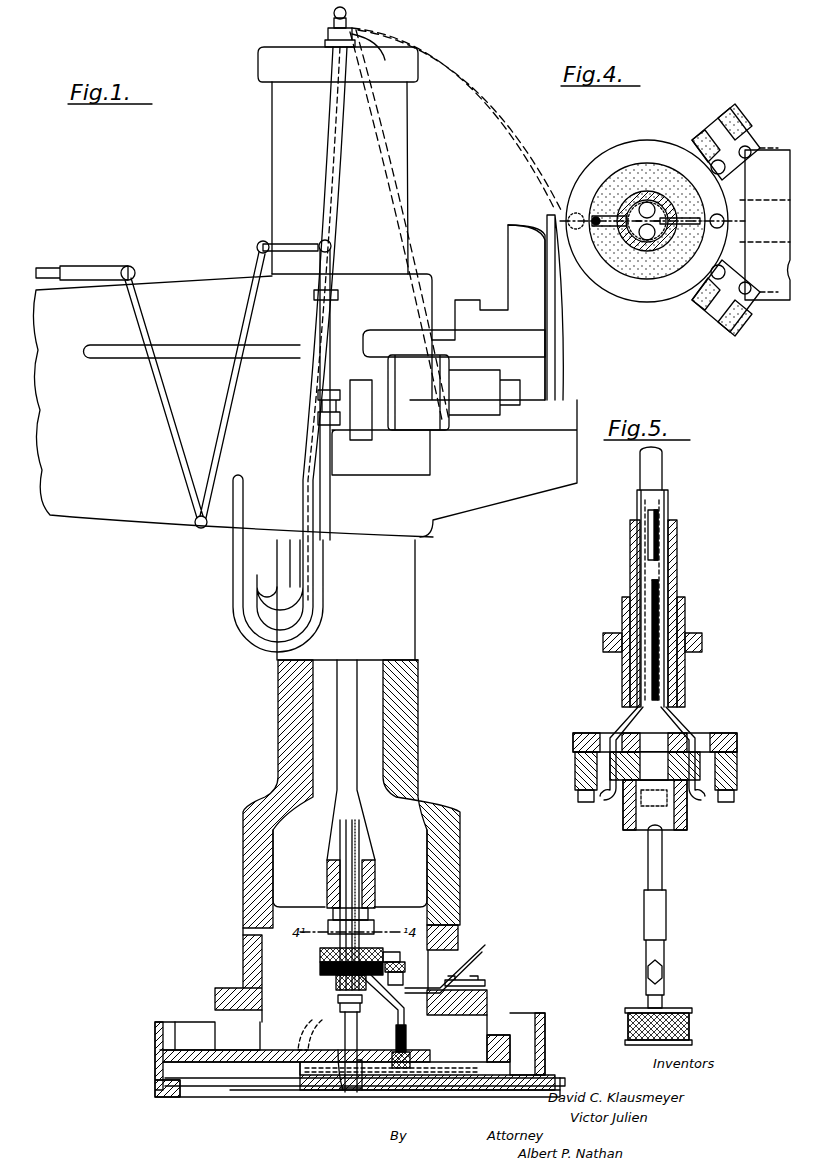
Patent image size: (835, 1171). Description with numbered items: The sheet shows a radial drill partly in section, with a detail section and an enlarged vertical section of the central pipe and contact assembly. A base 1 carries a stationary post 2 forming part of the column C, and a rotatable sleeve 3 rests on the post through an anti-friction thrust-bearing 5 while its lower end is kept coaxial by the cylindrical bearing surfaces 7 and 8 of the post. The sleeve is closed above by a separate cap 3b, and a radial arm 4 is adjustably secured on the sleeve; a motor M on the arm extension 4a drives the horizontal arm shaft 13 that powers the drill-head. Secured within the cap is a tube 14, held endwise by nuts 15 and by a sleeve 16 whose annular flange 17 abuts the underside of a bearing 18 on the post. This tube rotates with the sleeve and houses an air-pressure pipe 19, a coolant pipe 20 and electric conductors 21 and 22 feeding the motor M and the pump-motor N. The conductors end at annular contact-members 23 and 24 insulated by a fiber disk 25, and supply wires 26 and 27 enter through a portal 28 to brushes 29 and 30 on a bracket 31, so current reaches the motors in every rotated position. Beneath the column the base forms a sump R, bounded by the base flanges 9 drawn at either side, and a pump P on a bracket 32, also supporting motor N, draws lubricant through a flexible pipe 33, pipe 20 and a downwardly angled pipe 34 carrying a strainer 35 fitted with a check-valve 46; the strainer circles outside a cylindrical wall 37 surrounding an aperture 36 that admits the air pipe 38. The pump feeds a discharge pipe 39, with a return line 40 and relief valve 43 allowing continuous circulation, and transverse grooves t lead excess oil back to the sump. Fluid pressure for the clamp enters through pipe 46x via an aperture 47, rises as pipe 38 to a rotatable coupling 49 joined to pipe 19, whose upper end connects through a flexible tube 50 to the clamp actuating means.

In FIG. 1, the base 1 is at (157, 1052).
In FIG. 1, the post 2 is at (273, 860).
In FIG. 1, the sleeve 3 is at (418, 714).
In FIG. 1, the cap 3b is at (262, 84).
In FIG. 1, the radial arm 4 is at (233, 406).
In FIG. 1, the extension of the arm 4a is at (505, 497).
In FIG. 4, the anti-friction thrust-bearing 5 is at (570, 200).
In FIG. 1, the cylindrical bearing surface 7 is at (300, 738).
In FIG. 1, the cylindrical bearing surface 8 is at (250, 885).
In FIG. 1, the flange 9 is at (180, 1022).
In FIG. 1, the horizontal arm shaft 13 is at (202, 345).
In FIG. 1, the tube 14 is at (358, 740).
In FIG. 4, the tube 14 is at (688, 255).
In FIG. 5, the tube 14 is at (678, 566).
In FIG. 1, the nuts 15 is at (328, 42).
In FIG. 4, the nuts 15 is at (647, 256).
In FIG. 5, the nuts 15 is at (686, 606).
In FIG. 1, the sleeve 16 is at (375, 926).
In FIG. 5, the sleeve 16 is at (703, 636).
In FIG. 1, the annular flange 17 is at (370, 910).
In FIG. 1, the bearing 18 is at (376, 866).
In FIG. 1, the air-pressure pipe 19 is at (340, 832).
In FIG. 4, the air-pressure pipe 19 is at (648, 202).
In FIG. 5, the air-pressure pipe 19 is at (664, 462).
In FIG. 1, the lubricant or coolant pipe 20 is at (359, 834).
In FIG. 4, the lubricant or coolant pipe 20 is at (630, 240).
In FIG. 5, the lubricant or coolant pipe 20 is at (652, 530).
In FIG. 1, the electric conductor 21 is at (360, 45).
In FIG. 4, the electric conductor 21 is at (628, 212).
In FIG. 5, the electric conductor 21 is at (636, 492).
In FIG. 1, the electric conductor 22 is at (350, 30).
In FIG. 4, the electric conductor 22 is at (670, 212).
In FIG. 5, the electric conductor 22 is at (667, 502).
In FIG. 1, the annular contact-member 23 is at (322, 968).
In FIG. 5, the annular contact-member 23 is at (738, 772).
In FIG. 1, the annular contact-member 24 is at (320, 953).
In FIG. 4, the annular contact-member 24 is at (672, 302).
In FIG. 5, the annular contact-member 24 is at (738, 740).
In FIG. 1, the disk 25 is at (340, 980).
In FIG. 5, the disk 25 is at (622, 790).
In FIG. 1, the wire 26 is at (478, 937).
In FIG. 4, the wire 26 is at (790, 160).
In FIG. 1, the wire 27 is at (480, 970).
In FIG. 4, the wire 27 is at (745, 308).
In FIG. 1, the portal 28 is at (463, 965).
In FIG. 1, the contact brush 29 is at (396, 952).
In FIG. 4, the contact brush 29 is at (735, 150).
In FIG. 1, the contact brush 30 is at (406, 962).
In FIG. 4, the contact brush 30 is at (735, 312).
In FIG. 1, the bracket 31 is at (404, 976).
In FIG. 4, the bracket 31 is at (765, 285).
In FIG. 1, the bracket 32 is at (454, 468).
In FIG. 1, the flexible pipe 33 is at (332, 512).
In FIG. 1, the pipe 34 is at (392, 1000).
In FIG. 5, the pipe 34 is at (664, 862).
In FIG. 1, the strainer 35 is at (412, 1056).
In FIG. 5, the strainer 35 is at (694, 1026).
In FIG. 1, the aperture 36 is at (346, 1070).
In FIG. 1, the cylindrical wall 37 is at (340, 1065).
In FIG. 1, the air pipe 38 is at (360, 1070).
In FIG. 1, the discharge pipe 39 is at (294, 244).
In FIG. 1, the return line 40 is at (331, 312).
In FIG. 1, the relief valve 43 is at (332, 246).
In FIG. 1, the check-valve 46 is at (410, 1030).
In FIG. 1, the pipe 46x is at (566, 1080).
In FIG. 5, the pipe 46x is at (668, 962).
In FIG. 1, the aperture 47 is at (510, 1085).
In FIG. 1, the rotatable coupling 49 is at (336, 1000).
In FIG. 1, the flexible tube 50 is at (328, 92).
In FIG. 1, the column C is at (412, 183).
In FIG. 1, the motor M is at (526, 312).
In FIG. 1, the pump-motor N is at (454, 392).
In FIG. 1, the pump P is at (320, 402).
In FIG. 1, the reservoir or sump R is at (490, 1040).
In FIG. 1, the transverse groove t is at (226, 1035).